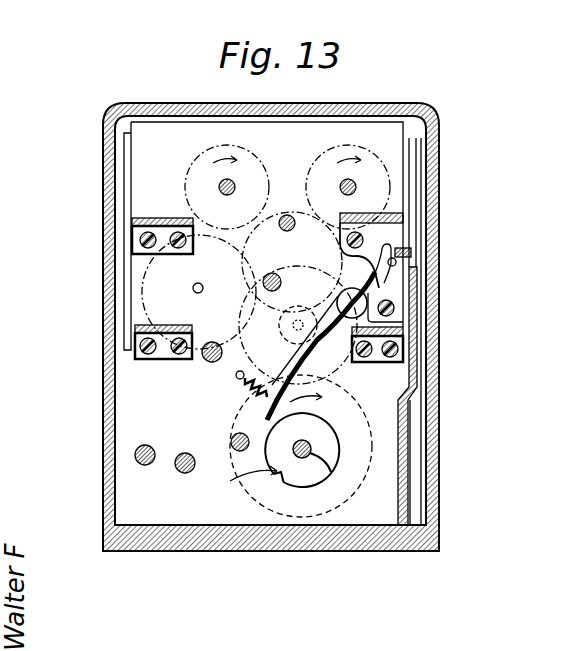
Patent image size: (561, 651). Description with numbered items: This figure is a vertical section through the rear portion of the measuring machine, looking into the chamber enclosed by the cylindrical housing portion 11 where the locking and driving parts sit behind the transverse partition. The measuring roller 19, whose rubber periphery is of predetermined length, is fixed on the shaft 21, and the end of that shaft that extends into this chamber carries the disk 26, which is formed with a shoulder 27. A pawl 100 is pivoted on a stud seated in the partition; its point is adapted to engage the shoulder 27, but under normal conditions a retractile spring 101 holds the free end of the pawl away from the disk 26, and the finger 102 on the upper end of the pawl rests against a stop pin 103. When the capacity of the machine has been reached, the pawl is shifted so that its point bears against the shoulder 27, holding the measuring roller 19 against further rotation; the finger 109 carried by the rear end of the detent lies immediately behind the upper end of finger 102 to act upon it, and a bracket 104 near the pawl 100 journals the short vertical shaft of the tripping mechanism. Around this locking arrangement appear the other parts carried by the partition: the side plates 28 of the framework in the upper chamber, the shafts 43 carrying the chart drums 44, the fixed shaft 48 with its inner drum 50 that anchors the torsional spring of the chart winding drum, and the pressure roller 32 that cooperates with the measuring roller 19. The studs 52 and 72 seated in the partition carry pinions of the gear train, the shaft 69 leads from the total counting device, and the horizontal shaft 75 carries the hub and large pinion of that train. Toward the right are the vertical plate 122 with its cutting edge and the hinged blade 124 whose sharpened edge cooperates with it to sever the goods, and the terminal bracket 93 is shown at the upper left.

The cylindrical housing portion 11 is at (105, 382).
The measuring roller 19 is at (377, 455).
The shaft 21 is at (310, 455).
The disk 26 is at (323, 433).
The shoulder 27 is at (237, 487).
The side plates 28 is at (128, 195).
The pressure roller 32 is at (251, 313).
The shafts 43 is at (345, 182).
The drums 44 is at (187, 180).
The shaft 48 is at (193, 288).
The drum 50 is at (140, 310).
The stud 52 is at (233, 440).
The shaft 69 is at (145, 444).
The stud 72 is at (205, 359).
The shaft 75 is at (268, 274).
The terminal block 93 is at (173, 218).
The pawl 100 is at (284, 361).
The retractile spring 101 is at (240, 392).
The finger 102 is at (370, 282).
The stop pin 103 is at (396, 264).
The bracket 104 is at (362, 217).
The finger 109 is at (412, 252).
The plate 122 is at (410, 480).
The blade 124 is at (422, 350).